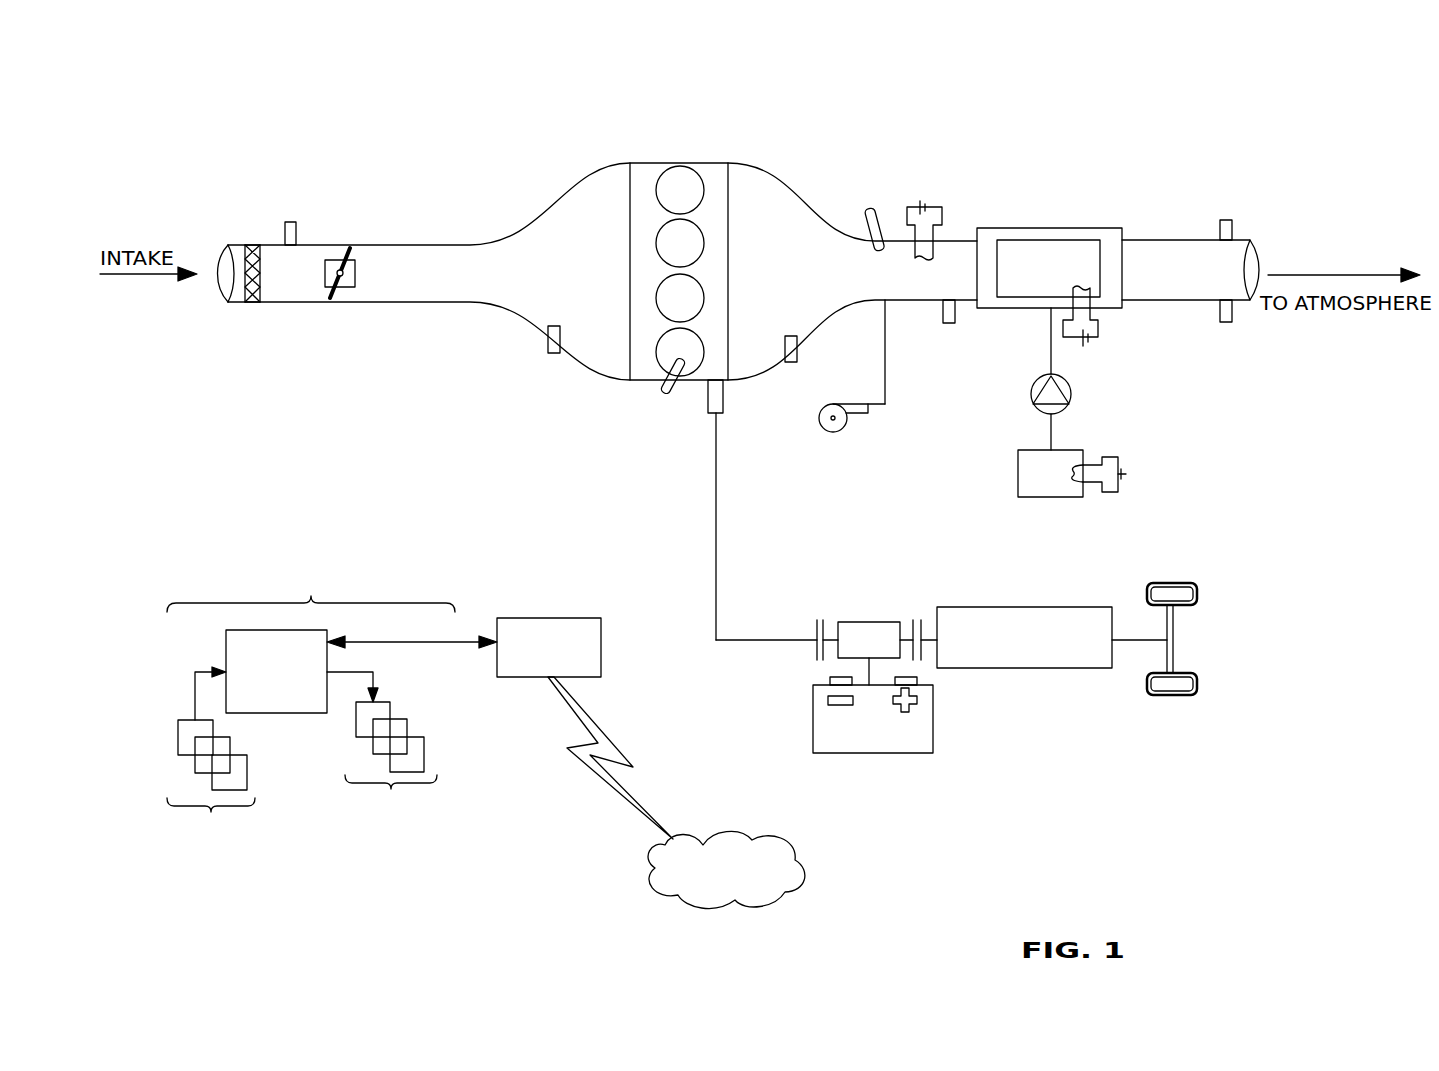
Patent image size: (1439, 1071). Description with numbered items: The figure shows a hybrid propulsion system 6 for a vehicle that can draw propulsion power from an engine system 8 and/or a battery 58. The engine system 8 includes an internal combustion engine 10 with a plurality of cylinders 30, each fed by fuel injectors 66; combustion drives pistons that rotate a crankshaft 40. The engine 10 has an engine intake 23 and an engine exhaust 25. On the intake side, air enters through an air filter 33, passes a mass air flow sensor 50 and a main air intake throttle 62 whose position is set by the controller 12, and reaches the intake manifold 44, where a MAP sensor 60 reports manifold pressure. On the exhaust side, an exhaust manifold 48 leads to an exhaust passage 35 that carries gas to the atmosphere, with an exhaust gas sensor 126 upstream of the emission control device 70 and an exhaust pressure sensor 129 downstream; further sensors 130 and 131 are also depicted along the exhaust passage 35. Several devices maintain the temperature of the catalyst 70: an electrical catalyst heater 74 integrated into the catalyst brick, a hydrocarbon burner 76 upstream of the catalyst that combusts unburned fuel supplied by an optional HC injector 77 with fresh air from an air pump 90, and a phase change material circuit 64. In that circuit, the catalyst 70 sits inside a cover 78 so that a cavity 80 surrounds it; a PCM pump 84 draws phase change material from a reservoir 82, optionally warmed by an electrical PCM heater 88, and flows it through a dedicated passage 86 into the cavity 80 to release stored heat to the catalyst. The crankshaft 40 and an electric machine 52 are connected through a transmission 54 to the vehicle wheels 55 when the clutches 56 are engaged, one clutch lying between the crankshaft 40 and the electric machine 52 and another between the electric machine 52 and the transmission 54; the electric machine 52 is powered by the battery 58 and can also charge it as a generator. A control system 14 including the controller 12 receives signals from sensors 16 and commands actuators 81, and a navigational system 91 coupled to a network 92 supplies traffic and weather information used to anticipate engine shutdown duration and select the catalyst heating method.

The hybrid propulsion system 6 is at (134, 80).
The engine system 8 is at (1216, 112).
The internal combustion engine 10 is at (696, 271).
The controller 12 is at (276, 671).
The control system 14 is at (332, 705).
The sensors 16 is at (211, 766).
The engine intake 23 is at (550, 190).
The engine exhaust 25 is at (838, 128).
The cylinders 30 is at (703, 184).
The air filter 33 is at (250, 245).
The exhaust passage 35 is at (1240, 240).
The crankshaft 40 is at (723, 400).
The intake manifold 44 is at (570, 284).
The exhaust manifold 48 is at (790, 284).
The mass air flow sensor 50 is at (285, 240).
The electric machine 52 is at (875, 622).
The transmission 54 is at (1090, 668).
The vehicle wheels 55 is at (1172, 695).
The clutches 56 is at (817, 630).
The battery 58 is at (868, 753).
The MAP sensor 60 is at (548, 333).
The main air intake throttle 62 is at (356, 287).
The phase change material circuit 64 is at (1106, 402).
The fuel injectors 66 is at (662, 389).
The emission control device 70 is at (1038, 280).
The catalyst heater 74 is at (1098, 331).
The hydrocarbon burner 76 is at (937, 207).
The HC injector 77 is at (868, 208).
The cover 78 is at (1049, 251).
The cavity 80 is at (985, 228).
The actuators 81 is at (382, 757).
The reservoir 82 is at (1066, 450).
The PCM pump 84 is at (1070, 390).
The dedicated passage 86 is at (1050, 356).
The electrical PCM heater 88 is at (1116, 457).
The air pump 90 is at (832, 432).
The navigational system 91 is at (539, 660).
The network 92 is at (717, 889).
The exhaust gas sensor 126 is at (797, 343).
The exhaust pressure sensor 129 is at (1220, 232).
The upstream sensor 130 is at (943, 312).
The downstream sensor 131 is at (1220, 314).